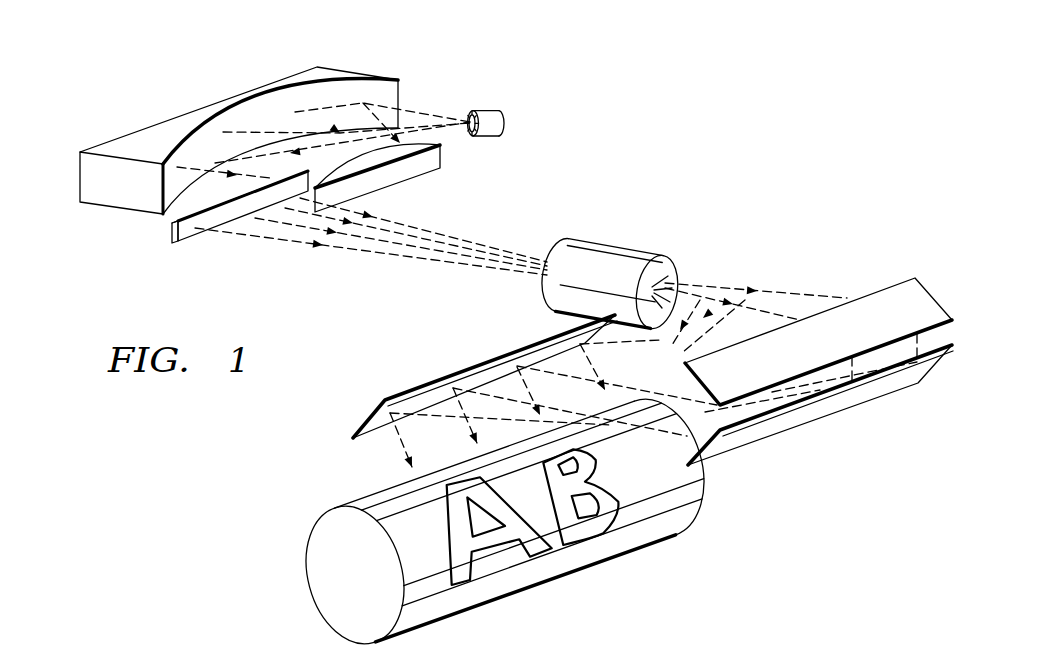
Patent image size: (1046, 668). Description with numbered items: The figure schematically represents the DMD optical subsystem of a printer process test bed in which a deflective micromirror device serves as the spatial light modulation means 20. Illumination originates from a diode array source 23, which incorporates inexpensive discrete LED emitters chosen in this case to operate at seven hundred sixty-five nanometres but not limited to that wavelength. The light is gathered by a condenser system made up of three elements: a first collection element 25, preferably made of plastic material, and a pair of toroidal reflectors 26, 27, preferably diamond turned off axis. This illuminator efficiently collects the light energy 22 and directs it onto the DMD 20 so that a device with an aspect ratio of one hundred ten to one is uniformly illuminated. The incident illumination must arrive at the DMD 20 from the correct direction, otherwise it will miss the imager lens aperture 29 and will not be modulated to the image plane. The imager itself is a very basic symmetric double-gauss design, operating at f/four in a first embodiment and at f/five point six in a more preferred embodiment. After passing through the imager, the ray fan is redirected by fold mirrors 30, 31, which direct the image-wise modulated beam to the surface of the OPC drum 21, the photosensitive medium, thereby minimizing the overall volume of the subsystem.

The deflective micromirror device (DMD) 20 is at (172, 244).
The OPC drum 21 is at (620, 549).
The light energy 22 is at (380, 458).
The diode array source 23 is at (496, 108).
The first collection element 25 is at (471, 113).
The toroidal reflector 26 is at (172, 126).
The toroidal reflector 27 is at (442, 152).
The imager lens aperture 29 is at (640, 250).
The fold mirror 30 is at (893, 286).
The fold mirror 31 is at (867, 402).